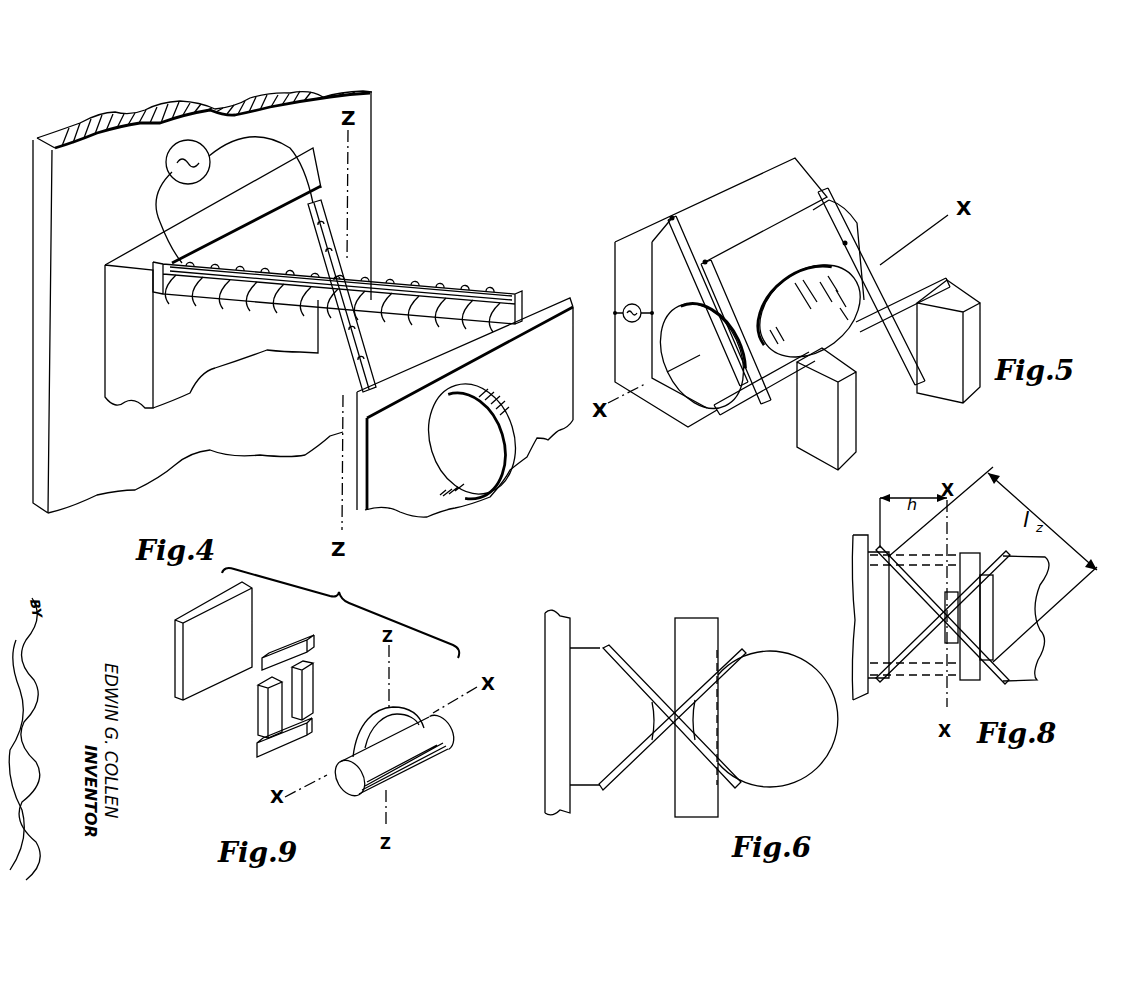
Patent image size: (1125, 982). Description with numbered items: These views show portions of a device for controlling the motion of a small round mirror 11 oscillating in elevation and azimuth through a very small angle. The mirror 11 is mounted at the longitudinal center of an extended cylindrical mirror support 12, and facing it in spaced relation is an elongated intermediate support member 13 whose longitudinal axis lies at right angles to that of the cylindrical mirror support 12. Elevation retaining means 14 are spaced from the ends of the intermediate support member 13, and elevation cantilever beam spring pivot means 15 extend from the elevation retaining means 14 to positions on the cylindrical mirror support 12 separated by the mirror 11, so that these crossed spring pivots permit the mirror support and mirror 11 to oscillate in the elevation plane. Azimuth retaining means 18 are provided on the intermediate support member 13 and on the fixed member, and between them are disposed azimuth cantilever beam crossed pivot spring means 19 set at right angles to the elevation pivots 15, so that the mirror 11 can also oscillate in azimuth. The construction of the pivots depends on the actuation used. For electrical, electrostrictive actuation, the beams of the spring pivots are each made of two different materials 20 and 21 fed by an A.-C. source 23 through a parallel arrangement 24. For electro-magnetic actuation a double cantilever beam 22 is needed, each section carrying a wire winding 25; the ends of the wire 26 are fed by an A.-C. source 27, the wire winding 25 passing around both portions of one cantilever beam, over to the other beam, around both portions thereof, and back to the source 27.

In FIG. 4, the mirror 11 is at (99, 186).
In FIG. 6, the mirror 11 is at (718, 633).
In FIG. 8, the mirror 11 is at (975, 555).
In FIG. 9, the mirror 11 is at (397, 712).
In FIG. 5, the cylindrical mirror support 12 is at (780, 278).
In FIG. 6, the cylindrical mirror support 12 is at (812, 733).
In FIG. 8, the cylindrical mirror support 12 is at (945, 600).
In FIG. 9, the cylindrical mirror support 12 is at (437, 750).
In FIG. 4, the intermediate support member 13 is at (402, 495).
In FIG. 6, the intermediate support member 13 is at (565, 632).
In FIG. 9, the intermediate support member 13 is at (192, 612).
In FIG. 5, the elevation retaining means 14 is at (956, 296).
In FIG. 6, the elevation retaining means 14 is at (612, 716).
In FIG. 5, the elevation cantilever beam spring pivot means 15 is at (870, 254).
In FIG. 6, the elevation cantilever beam spring pivot means 15 is at (628, 665).
In FIG. 4, the azimuth retaining means 18 is at (108, 325).
In FIG. 4, the azimuth cantilever beam crossed pivot spring means 19 is at (236, 297).
In FIG. 5, the first material 20 is at (753, 397).
In FIG. 5, the second material 21 is at (727, 410).
In FIG. 4, the double cantilever beam 22 is at (447, 288).
In FIG. 5, the A.-C. source 23 is at (637, 323).
In FIG. 5, the parallel arrangement 24 is at (720, 193).
In FIG. 4, the wire winding 25 is at (387, 278).
In FIG. 4, the wire 26 is at (153, 199).
In FIG. 4, the A.-C. source 27 is at (194, 141).